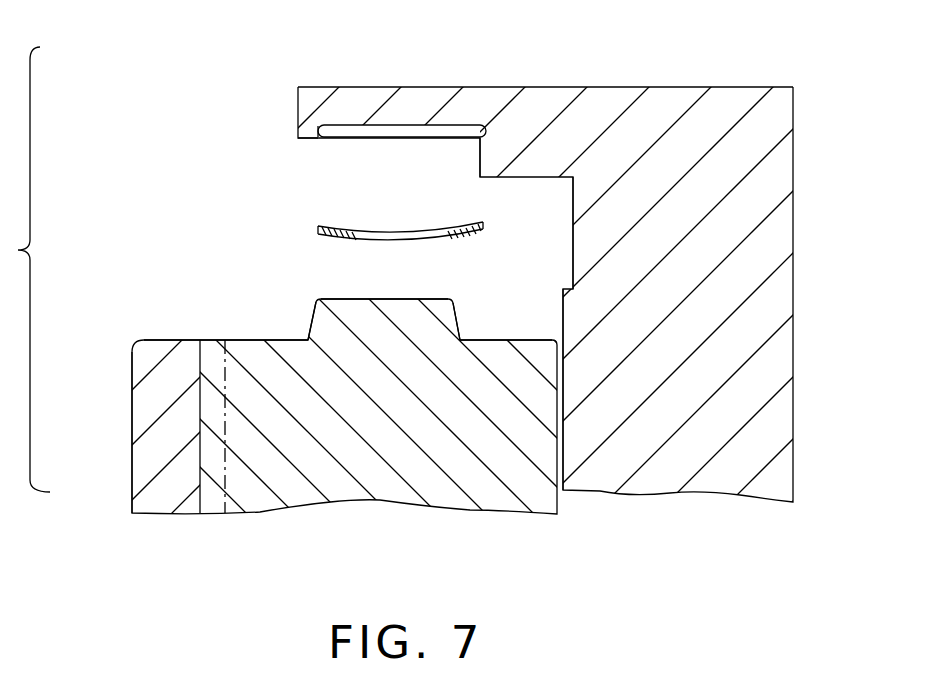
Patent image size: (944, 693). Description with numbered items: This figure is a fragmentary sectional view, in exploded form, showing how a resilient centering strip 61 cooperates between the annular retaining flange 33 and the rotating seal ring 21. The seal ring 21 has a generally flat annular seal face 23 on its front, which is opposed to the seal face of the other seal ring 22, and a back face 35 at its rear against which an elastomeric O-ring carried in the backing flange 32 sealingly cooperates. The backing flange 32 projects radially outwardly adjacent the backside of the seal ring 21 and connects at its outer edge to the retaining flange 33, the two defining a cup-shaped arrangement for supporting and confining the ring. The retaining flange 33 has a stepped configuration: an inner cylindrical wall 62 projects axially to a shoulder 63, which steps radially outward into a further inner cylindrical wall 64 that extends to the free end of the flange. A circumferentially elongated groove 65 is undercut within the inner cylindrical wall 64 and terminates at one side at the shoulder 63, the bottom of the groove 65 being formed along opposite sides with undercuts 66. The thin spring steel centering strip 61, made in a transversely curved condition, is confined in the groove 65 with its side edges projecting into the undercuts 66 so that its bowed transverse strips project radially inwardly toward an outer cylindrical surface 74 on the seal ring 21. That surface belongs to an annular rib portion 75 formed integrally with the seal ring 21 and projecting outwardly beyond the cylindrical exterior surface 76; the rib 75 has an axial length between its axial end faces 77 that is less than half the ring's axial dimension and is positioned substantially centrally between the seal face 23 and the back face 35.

The seal ring 21 is at (278, 480).
The seal ring 22 is at (148, 472).
The seal face 23 is at (198, 480).
The backing flange 32 is at (794, 293).
The annular retaining flange 33 is at (546, 98).
The back face 35 is at (558, 465).
The resilient centering strip 61 is at (357, 237).
The inner cylindrical wall 62 is at (533, 178).
The shoulder 63 is at (479, 169).
The inner cylindrical wall 64 is at (308, 138).
The groove 65 is at (358, 132).
The undercut 66 is at (324, 141).
The outer cylindrical surface 74 is at (348, 298).
The annular rib portion 75 is at (435, 298).
The cylindrical exterior surface 76 is at (233, 339).
The axial end face 77 is at (305, 320).